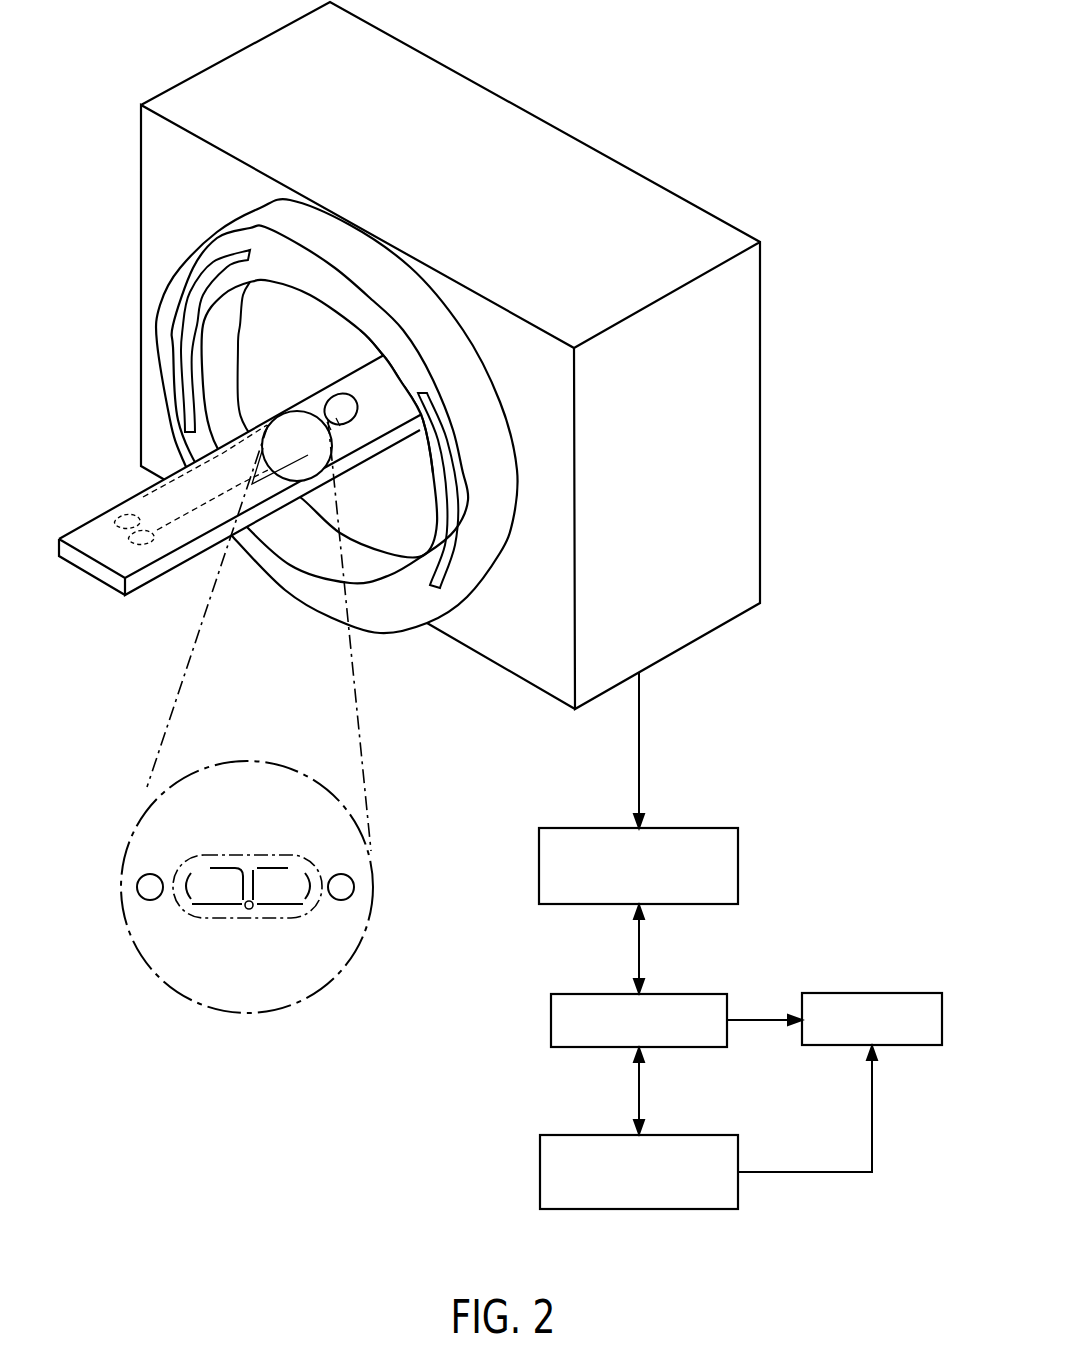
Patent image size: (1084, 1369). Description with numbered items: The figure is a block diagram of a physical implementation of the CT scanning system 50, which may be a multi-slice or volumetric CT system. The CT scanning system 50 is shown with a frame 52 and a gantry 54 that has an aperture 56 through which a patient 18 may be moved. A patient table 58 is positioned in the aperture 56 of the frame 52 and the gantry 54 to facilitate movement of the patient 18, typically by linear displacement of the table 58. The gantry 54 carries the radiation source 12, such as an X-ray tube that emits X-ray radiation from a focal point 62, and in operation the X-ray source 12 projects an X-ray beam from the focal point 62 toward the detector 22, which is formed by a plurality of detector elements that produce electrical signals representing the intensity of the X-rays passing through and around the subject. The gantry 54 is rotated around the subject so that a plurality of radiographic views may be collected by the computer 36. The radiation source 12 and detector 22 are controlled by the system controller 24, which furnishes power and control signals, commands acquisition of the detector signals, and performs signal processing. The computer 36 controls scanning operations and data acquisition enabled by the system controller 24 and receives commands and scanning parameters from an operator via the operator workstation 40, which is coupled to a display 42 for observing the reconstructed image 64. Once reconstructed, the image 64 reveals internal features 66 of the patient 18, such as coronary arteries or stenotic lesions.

The radiation source 12 is at (180, 377).
The patient 18 is at (143, 493).
The detector 22 is at (448, 553).
The system controller 24 is at (539, 872).
The computer 36 is at (551, 1022).
The operator workstation 40 is at (540, 1177).
The display 42 is at (875, 993).
The CT scanning system 50 is at (459, 355).
The frame 52 is at (762, 418).
The gantry 54 is at (397, 607).
The aperture 56 is at (322, 333).
The patient table 58 is at (100, 572).
The focal point 62 is at (218, 333).
The reconstructed image 64 is at (290, 1007).
The internal features 66 is at (300, 855).